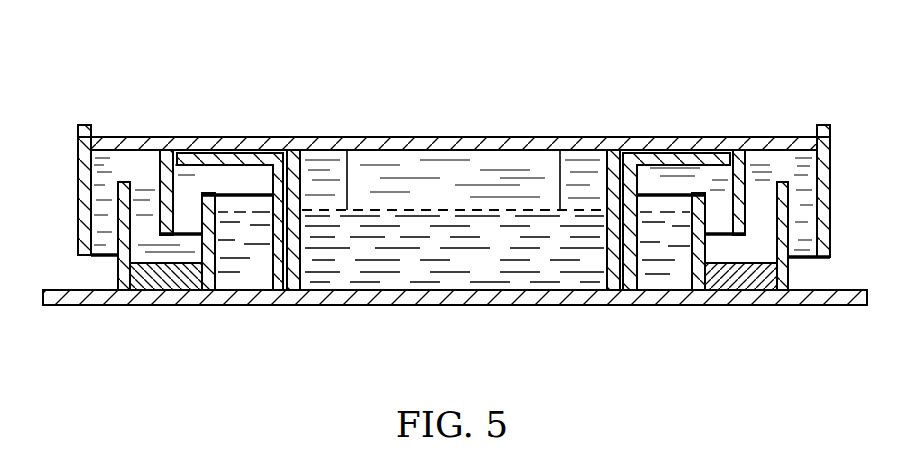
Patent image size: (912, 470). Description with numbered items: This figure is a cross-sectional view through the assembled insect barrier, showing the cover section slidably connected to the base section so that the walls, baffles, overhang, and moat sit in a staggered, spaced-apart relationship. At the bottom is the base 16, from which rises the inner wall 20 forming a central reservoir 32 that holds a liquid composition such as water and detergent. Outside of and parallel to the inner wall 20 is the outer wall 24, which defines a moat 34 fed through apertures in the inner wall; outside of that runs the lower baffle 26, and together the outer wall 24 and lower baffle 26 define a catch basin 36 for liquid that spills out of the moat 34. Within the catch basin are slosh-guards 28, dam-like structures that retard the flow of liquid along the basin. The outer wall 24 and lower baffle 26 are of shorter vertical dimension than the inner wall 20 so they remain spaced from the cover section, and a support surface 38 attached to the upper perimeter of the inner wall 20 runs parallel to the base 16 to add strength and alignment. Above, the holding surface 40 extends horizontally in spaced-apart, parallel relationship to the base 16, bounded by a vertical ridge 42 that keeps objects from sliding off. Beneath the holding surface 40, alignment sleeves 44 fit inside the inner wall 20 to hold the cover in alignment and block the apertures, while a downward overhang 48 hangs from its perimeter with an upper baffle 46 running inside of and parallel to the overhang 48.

The base 16 is at (453, 300).
The inner wall 20 is at (632, 200).
The outer wall 24 is at (210, 250).
The lower baffle 26 is at (782, 267).
The slosh-guards 28 is at (153, 292).
The reservoir 32 is at (487, 240).
The moat 34 is at (238, 226).
The catch basin 36 is at (727, 253).
The support surface 38 is at (678, 160).
The holding surface 40 is at (537, 143).
The ridge 42 is at (92, 128).
The alignment sleeves 44 is at (323, 180).
The upper baffle 46 is at (750, 182).
The overhang 48 is at (76, 172).